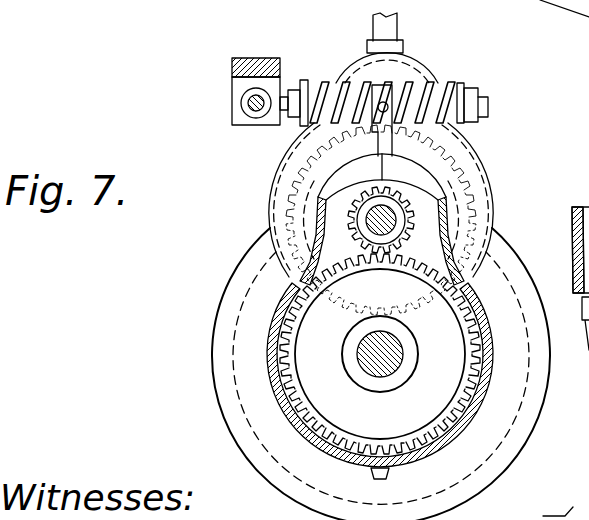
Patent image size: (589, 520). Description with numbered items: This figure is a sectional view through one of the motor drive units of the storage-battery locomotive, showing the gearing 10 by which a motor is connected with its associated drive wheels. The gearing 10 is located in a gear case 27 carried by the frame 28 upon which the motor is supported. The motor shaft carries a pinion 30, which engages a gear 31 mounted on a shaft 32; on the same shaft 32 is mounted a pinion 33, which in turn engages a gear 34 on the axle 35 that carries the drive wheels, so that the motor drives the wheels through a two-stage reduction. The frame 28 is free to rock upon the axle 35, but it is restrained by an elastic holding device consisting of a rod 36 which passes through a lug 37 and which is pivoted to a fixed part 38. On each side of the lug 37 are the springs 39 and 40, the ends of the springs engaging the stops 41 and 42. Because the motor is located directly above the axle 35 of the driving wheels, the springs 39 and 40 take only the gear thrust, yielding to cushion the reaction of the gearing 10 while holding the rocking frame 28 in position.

The gearing 10 is at (401, 225).
The gear case 27 is at (287, 289).
The frame 28 is at (214, 326).
The pinion 30 is at (425, 68).
The gear 31 is at (470, 176).
The shaft 32 is at (382, 236).
The pinion 33 is at (413, 217).
The gear 34 is at (463, 373).
The axle 35 is at (383, 375).
The rod 36 is at (488, 104).
The lug 37 is at (392, 140).
The fixed part 38 is at (232, 84).
The spring 39 is at (427, 87).
The spring 40 is at (330, 92).
The stop 41 is at (465, 88).
The stop 42 is at (328, 112).